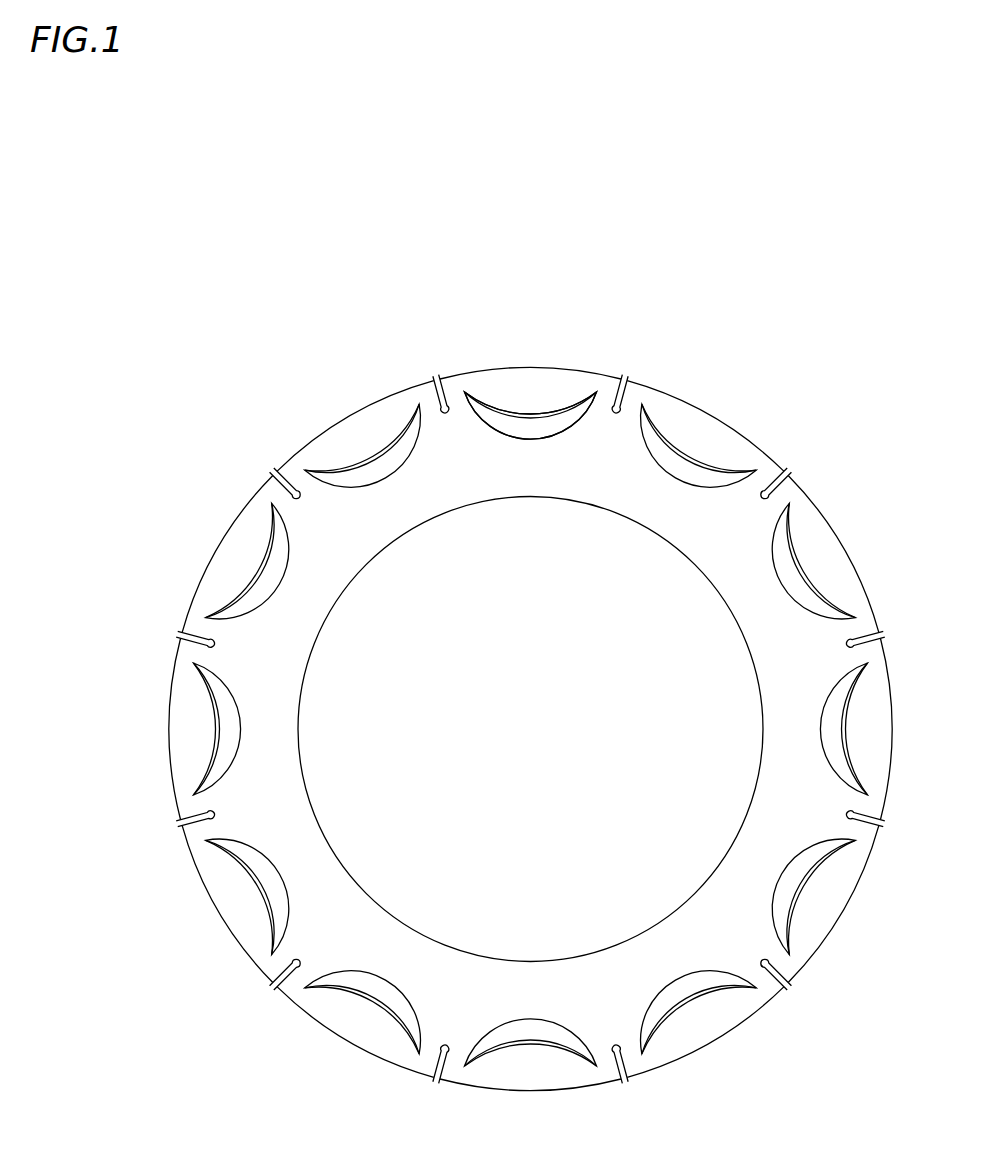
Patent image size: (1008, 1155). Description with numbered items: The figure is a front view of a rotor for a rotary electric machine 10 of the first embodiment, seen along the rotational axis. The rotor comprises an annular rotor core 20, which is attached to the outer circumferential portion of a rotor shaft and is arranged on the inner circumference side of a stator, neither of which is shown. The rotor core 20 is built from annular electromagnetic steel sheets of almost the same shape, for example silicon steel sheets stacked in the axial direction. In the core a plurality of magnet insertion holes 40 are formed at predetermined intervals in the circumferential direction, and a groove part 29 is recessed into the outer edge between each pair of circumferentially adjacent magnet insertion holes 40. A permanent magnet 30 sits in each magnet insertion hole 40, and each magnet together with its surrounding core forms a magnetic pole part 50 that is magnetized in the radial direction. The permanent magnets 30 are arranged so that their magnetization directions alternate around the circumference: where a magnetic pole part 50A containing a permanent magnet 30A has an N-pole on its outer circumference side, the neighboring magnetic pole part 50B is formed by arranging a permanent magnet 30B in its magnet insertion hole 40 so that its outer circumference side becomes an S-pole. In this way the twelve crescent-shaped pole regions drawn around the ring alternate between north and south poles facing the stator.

The rotor for a rotary electric machine 10 is at (740, 257).
The rotor core 20 is at (727, 412).
The groove part 29 is at (629, 378).
The permanent magnet 30 is at (522, 411).
The magnet insertion hole 40 is at (548, 416).
The magnetic pole part 50 is at (527, 448).
The permanent magnet 30A is at (223, 738).
The permanent magnet 30B is at (262, 585).
The magnetic pole part 50A is at (250, 728).
The magnetic pole part 50B is at (290, 592).